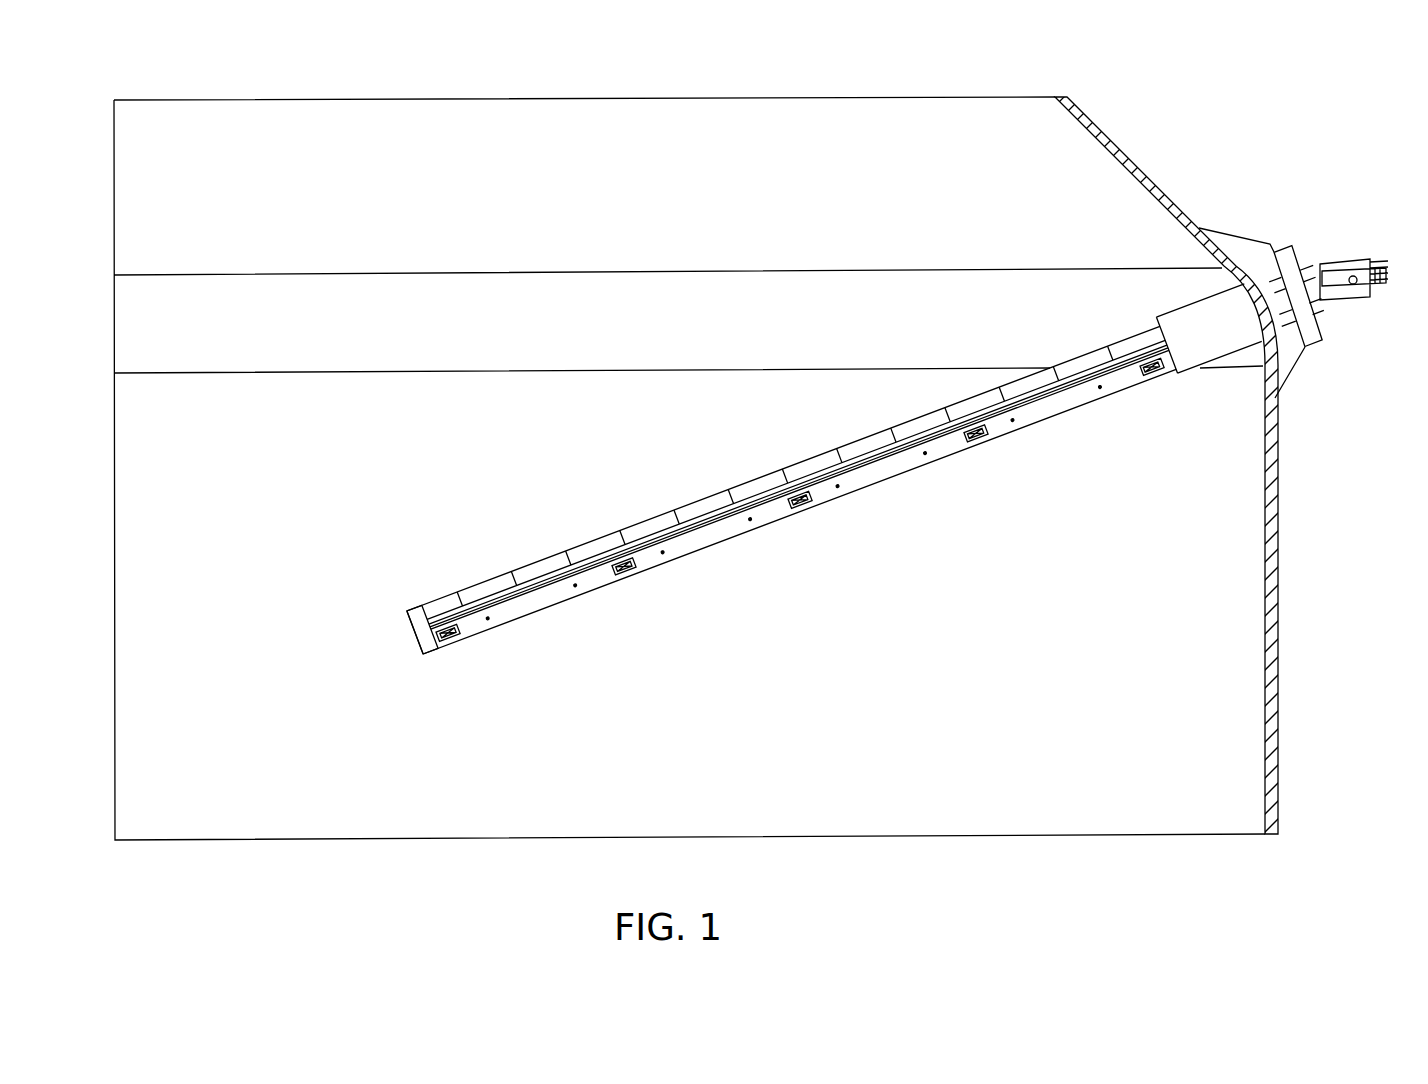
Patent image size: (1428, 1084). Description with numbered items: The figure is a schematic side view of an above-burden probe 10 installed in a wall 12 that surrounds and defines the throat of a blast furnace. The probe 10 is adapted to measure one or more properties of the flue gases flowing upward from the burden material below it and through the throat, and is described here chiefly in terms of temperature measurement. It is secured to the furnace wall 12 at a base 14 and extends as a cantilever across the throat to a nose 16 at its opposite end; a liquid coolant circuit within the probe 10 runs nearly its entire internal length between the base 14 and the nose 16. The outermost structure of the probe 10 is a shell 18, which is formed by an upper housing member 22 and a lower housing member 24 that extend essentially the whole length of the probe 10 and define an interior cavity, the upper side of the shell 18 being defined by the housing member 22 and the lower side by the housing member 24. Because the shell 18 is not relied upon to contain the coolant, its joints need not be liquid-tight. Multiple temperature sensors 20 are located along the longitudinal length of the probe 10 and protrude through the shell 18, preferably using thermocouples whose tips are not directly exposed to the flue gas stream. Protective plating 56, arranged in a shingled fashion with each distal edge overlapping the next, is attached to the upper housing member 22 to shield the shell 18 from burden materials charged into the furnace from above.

The probe 10 is at (763, 525).
The wall 12 is at (1143, 180).
The base 14 is at (1322, 341).
The nose 16 is at (418, 635).
The shell 18 is at (735, 548).
The temperature sensors 20 is at (457, 637).
The housing member 22 is at (477, 610).
The housing member 24 is at (430, 643).
The protective plating 56 is at (802, 466).